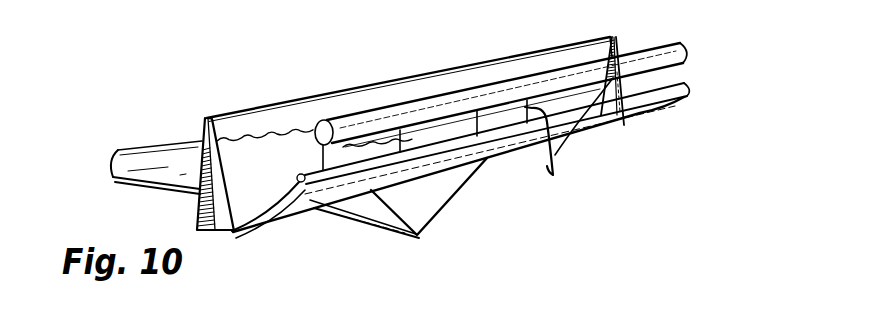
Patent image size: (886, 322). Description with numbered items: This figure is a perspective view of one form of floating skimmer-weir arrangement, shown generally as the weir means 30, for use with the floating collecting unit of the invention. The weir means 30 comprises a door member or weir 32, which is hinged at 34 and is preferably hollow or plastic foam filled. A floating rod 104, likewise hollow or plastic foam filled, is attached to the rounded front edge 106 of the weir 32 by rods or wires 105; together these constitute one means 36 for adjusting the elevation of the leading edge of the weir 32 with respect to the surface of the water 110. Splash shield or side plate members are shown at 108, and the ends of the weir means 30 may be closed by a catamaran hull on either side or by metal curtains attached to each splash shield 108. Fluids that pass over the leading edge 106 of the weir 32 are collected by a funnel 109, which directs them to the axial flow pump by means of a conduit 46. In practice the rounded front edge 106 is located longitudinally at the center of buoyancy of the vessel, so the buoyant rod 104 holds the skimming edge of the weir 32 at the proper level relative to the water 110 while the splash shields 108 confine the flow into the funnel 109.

The weir means 30 is at (438, 146).
The weir 32 is at (292, 213).
The hinge 34 is at (233, 233).
The means for raising the door member 36 is at (693, 75).
The conduit 46 is at (149, 151).
The floating rod 104 is at (690, 49).
The rods or wires 105 is at (569, 140).
The rounded front edge 106 is at (350, 163).
The splash shield 108 is at (213, 189).
The funnel 109 is at (430, 207).
The water 110 is at (272, 128).